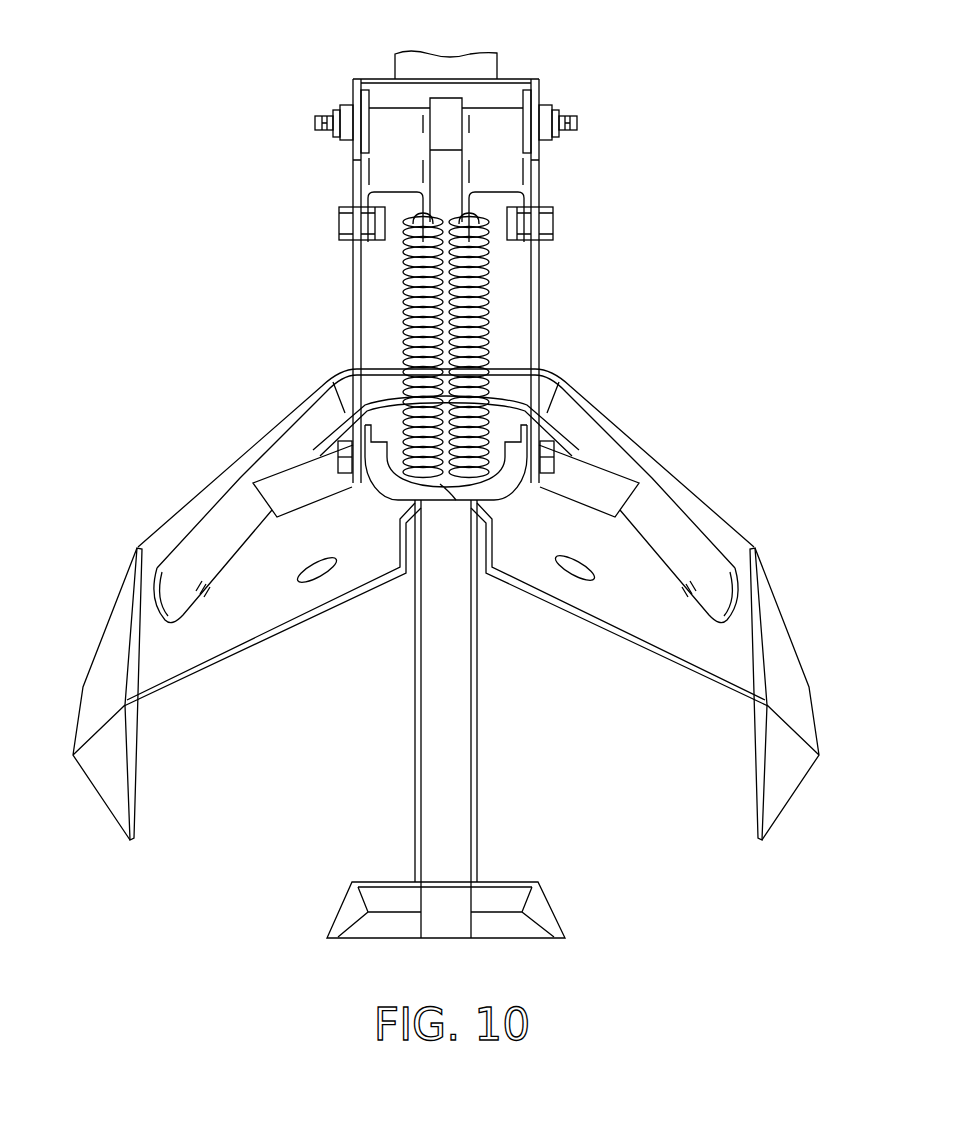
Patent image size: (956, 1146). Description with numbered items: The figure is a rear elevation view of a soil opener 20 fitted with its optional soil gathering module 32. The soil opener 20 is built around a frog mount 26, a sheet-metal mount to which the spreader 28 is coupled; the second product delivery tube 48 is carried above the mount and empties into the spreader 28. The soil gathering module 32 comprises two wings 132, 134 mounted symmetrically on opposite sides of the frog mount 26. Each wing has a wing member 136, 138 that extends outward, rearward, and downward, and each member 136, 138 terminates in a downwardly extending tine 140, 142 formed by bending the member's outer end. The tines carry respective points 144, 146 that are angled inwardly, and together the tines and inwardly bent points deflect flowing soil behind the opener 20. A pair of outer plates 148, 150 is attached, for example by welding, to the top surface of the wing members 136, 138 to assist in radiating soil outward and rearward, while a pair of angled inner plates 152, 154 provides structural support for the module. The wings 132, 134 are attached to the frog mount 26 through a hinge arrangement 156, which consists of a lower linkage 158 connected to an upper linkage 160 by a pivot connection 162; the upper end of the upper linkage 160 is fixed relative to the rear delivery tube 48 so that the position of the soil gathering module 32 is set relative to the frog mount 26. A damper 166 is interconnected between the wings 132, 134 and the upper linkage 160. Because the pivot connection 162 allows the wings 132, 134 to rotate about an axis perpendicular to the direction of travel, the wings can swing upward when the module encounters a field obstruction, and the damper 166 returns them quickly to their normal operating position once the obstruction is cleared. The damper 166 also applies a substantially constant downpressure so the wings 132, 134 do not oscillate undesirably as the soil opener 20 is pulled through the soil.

The soil opener 20 is at (235, 93).
The frog mount 26 is at (402, 772).
The spreader 28 is at (378, 947).
The soil gathering module 32 is at (685, 465).
The second product delivery tube 48 is at (466, 67).
The wing 132 is at (222, 622).
The wing 134 is at (662, 620).
The wing member 136 is at (330, 588).
The wing member 138 is at (537, 573).
The tine 140 is at (117, 767).
The tine 142 is at (777, 783).
The point 144 is at (98, 802).
The point 146 is at (793, 798).
The outer plate 148 is at (208, 530).
The outer plate 150 is at (702, 550).
The inner plate 152 is at (320, 485).
The inner plate 154 is at (595, 495).
The hinge arrangement 156 is at (333, 360).
The lower linkage 158 is at (357, 293).
The upper linkage 160 is at (367, 178).
The pivot connection 162 is at (347, 223).
The damper 166 is at (490, 347).